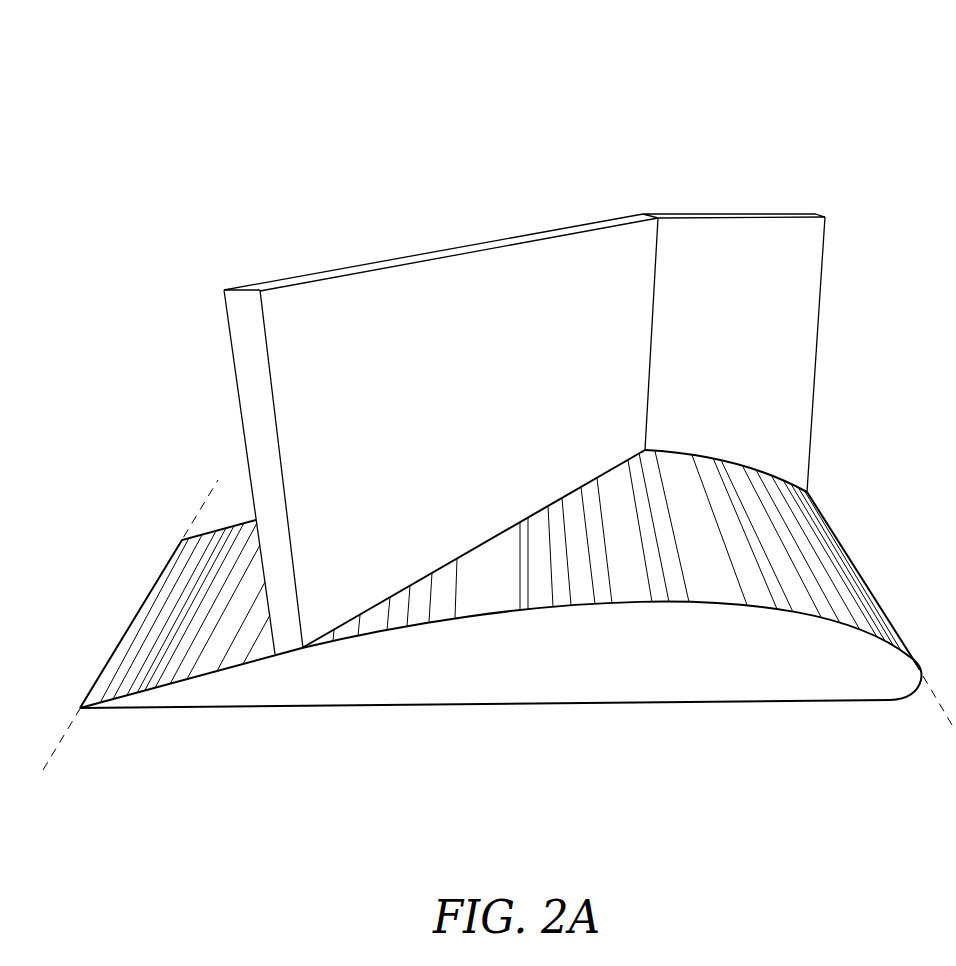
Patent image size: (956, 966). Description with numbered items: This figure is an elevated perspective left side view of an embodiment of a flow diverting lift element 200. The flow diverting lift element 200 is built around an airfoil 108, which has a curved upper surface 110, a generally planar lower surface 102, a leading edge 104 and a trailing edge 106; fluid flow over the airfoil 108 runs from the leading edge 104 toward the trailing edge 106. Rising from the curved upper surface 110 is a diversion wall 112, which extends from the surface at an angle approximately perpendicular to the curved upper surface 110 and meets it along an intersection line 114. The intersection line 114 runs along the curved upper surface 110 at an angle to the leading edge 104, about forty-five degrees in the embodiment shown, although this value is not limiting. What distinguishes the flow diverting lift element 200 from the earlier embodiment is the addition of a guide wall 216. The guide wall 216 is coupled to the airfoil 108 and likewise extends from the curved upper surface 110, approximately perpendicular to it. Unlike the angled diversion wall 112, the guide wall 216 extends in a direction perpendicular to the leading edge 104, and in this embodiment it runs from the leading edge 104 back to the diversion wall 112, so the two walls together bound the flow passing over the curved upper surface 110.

The flow diverting lift element 200 is at (722, 84).
The lower surface 102 is at (489, 746).
The leading edge 104 is at (863, 577).
The trailing edge 106 is at (133, 625).
The airfoil 108 is at (745, 690).
The curved upper surface 110 is at (708, 524).
The diversion wall 112 is at (480, 268).
The intersection line 114 is at (489, 531).
The guide wall 216 is at (812, 352).